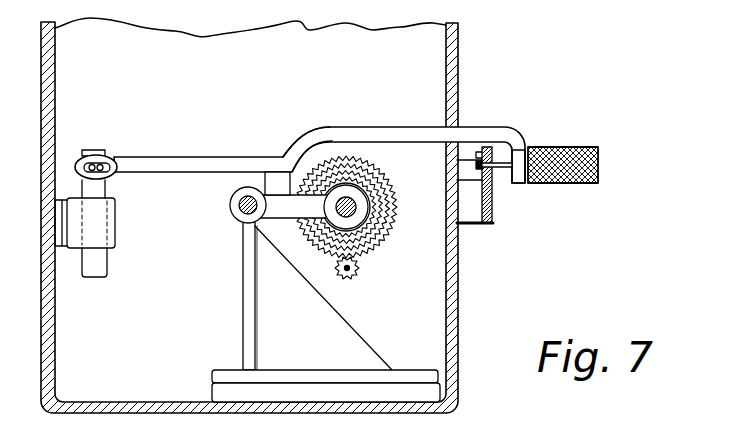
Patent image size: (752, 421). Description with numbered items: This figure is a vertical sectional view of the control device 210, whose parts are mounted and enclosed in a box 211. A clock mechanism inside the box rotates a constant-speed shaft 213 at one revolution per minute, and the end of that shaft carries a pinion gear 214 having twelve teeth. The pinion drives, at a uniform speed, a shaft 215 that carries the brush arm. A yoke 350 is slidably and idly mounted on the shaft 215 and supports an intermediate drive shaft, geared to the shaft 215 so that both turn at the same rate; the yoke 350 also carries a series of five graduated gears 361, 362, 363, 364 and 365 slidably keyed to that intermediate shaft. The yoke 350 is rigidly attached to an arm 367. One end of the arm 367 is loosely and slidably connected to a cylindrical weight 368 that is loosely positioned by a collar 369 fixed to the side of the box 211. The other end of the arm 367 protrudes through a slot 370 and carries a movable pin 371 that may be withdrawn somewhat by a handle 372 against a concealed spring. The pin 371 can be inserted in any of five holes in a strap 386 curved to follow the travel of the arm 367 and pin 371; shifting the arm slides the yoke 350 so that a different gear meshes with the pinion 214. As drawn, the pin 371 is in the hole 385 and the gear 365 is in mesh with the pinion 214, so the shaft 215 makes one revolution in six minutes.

The control device 210 is at (260, 103).
The box 211 is at (456, 122).
The constant-speed shaft 213 is at (352, 276).
The pinion gear 214 is at (352, 268).
The shaft 215 is at (236, 218).
The yoke 350 is at (288, 210).
The graduated gear 361 is at (380, 166).
The graduated gear 362 is at (386, 184).
The graduated gear 363 is at (395, 206).
The graduated gear 364 is at (390, 224).
The graduated gear 365 is at (388, 245).
The arm 367 is at (386, 128).
The weight 368 is at (98, 268).
The collar 369 is at (108, 223).
The slot 370 is at (457, 127).
The movable pin 371 is at (498, 168).
The handle 372 is at (575, 178).
The hole 385 is at (505, 155).
The strap 386 is at (492, 223).